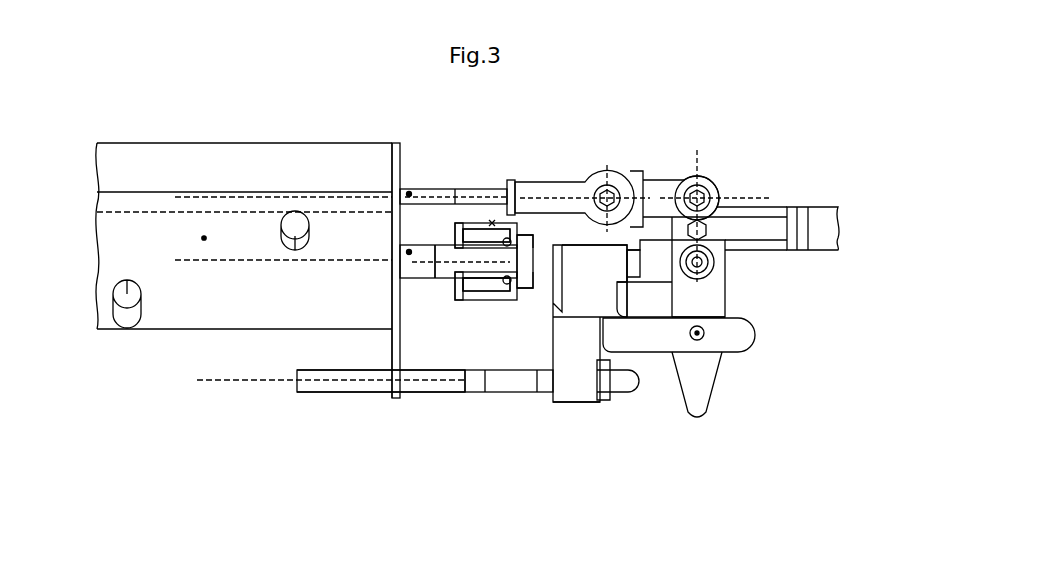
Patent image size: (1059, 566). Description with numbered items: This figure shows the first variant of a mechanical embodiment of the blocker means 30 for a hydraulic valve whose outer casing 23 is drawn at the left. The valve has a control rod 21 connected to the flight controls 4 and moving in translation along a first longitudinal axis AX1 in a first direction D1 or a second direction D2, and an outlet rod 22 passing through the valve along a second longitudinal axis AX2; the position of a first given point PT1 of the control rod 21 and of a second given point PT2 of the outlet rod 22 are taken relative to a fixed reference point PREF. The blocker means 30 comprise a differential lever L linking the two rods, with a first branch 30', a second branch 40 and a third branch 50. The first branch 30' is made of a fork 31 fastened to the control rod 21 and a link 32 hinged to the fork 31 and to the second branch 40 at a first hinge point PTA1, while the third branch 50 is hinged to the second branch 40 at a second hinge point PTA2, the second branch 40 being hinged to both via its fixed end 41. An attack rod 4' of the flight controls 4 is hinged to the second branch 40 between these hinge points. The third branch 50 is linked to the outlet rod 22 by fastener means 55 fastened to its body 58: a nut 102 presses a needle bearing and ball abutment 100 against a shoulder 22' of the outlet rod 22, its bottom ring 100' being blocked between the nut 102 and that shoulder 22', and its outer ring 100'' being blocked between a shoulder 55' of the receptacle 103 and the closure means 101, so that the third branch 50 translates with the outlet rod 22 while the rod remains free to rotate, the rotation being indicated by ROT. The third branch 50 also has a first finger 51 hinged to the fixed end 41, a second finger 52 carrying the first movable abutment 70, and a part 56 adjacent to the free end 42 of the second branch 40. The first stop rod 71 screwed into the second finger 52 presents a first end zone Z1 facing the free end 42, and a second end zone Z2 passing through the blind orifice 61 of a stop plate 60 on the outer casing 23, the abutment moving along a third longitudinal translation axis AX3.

The flight controls 4 is at (757, 174).
The attack rod 4' is at (814, 202).
The control rod 21 is at (477, 189).
The outlet rod 22 is at (427, 271).
The shoulder of the outlet rod 22' is at (422, 243).
The outer casing 23 is at (350, 142).
The blocker means 30 is at (653, 491).
The first branch 30' is at (661, 99).
The fork 31 is at (585, 180).
The link 32 is at (678, 181).
The second branch 40 is at (726, 292).
The fixed end 41 is at (719, 186).
The free end 42 is at (720, 400).
The third branch 50 is at (548, 308).
The first finger 51 is at (650, 199).
The second finger 52 is at (586, 402).
The fastener means 55 is at (546, 213).
The shoulder of the receptacle 55' is at (517, 182).
The bar 56 is at (735, 336).
The body 58 is at (654, 286).
The stop plate 60 is at (392, 362).
The blind orifice 61 is at (403, 347).
The first movable abutment 70 is at (453, 420).
The first stop rod 71 is at (548, 403).
The needle bearing and ball abutment 100 is at (491, 201).
The bottom ring 100' is at (601, 281).
The outer ring 100'' is at (439, 219).
The closure means 101 is at (478, 300).
The nut 102 is at (533, 285).
The receptacle 103 is at (516, 318).
The first longitudinal axis AX1 is at (228, 195).
The second longitudinal axis AX2 is at (210, 262).
The third longitudinal translation axis AX3 is at (218, 382).
The first given point PT1 is at (407, 193).
The second given point PT2 is at (407, 251).
The first hinge point PTA1 is at (700, 186).
The second hinge point PTA2 is at (715, 262).
The fixed reference point PREF is at (171, 234).
The rotation direction ROT is at (433, 238).
The first direction D1 is at (212, 52).
The second direction D2 is at (355, 52).
The differential lever L is at (601, 131).
The first end zone Z1 is at (624, 398).
The second end zone Z2 is at (368, 400).